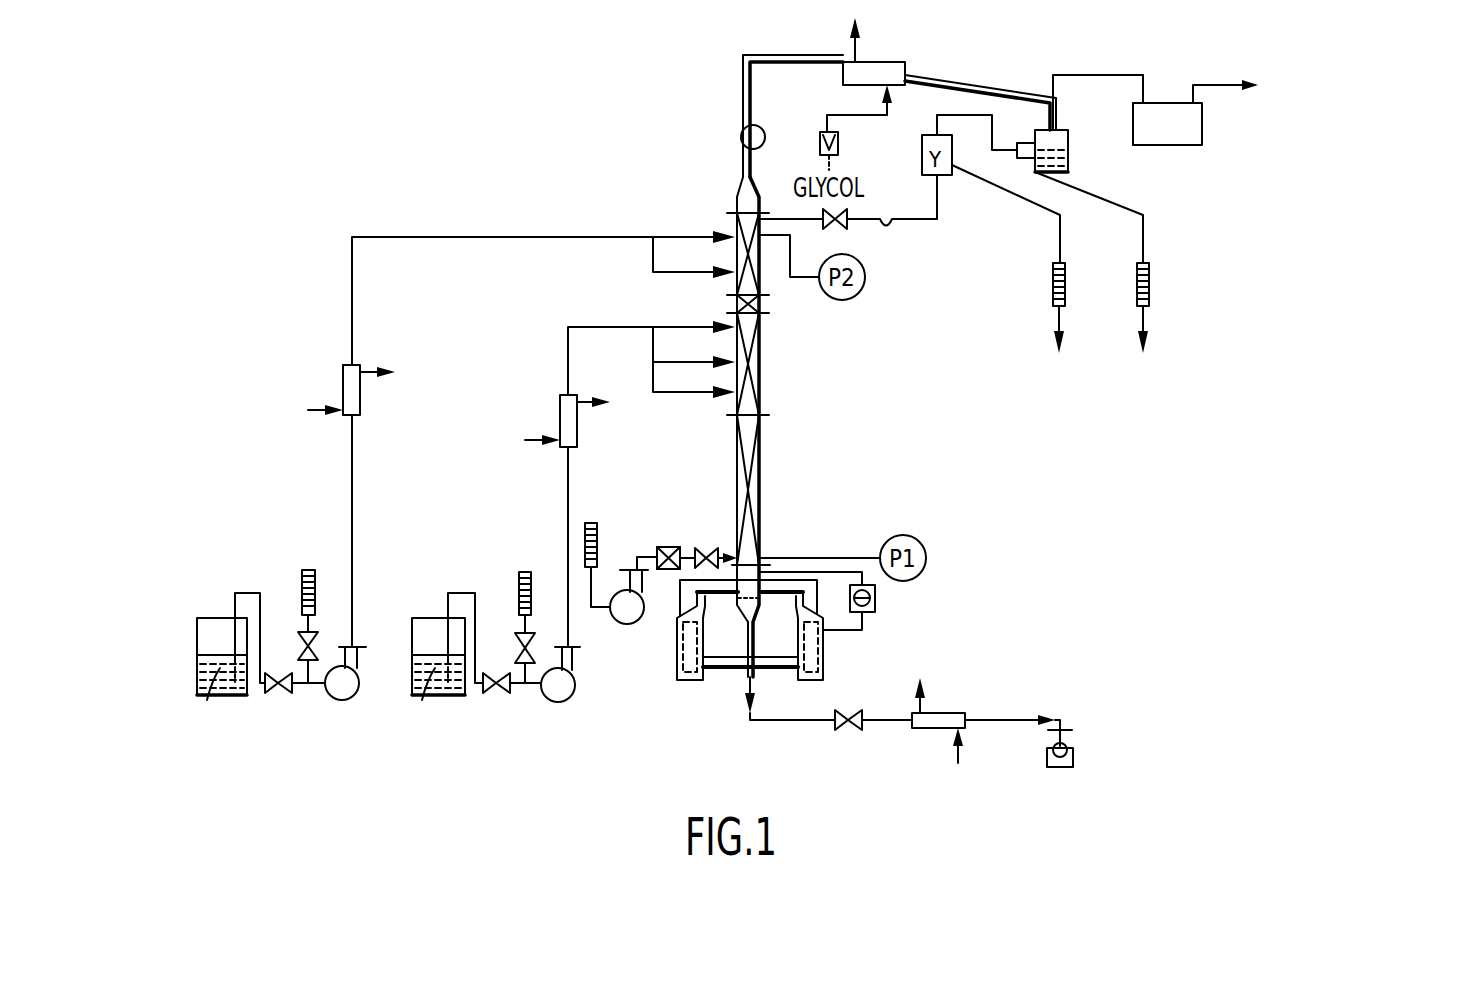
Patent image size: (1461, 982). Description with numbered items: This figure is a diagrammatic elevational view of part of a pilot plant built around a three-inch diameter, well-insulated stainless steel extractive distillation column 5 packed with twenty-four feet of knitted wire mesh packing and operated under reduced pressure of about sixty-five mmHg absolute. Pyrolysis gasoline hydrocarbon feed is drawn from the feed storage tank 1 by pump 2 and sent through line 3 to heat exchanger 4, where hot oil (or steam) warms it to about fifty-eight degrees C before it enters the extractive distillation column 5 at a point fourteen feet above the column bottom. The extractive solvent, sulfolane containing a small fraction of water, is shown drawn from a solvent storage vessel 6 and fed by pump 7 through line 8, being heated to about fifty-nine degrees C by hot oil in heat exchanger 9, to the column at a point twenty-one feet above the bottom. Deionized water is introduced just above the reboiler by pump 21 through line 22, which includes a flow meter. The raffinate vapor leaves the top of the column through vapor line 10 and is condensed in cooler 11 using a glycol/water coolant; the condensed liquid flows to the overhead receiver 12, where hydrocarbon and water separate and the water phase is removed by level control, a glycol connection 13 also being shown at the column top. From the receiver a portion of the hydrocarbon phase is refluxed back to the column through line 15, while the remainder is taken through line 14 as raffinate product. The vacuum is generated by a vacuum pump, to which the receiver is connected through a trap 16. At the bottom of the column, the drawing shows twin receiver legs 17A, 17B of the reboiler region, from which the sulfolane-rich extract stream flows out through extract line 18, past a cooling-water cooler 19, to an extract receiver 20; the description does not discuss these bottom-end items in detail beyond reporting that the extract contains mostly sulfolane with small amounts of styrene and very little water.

The feed storage tank 1 is at (464, 675).
The pump 2 is at (575, 686).
The line 3 is at (568, 537).
The heat exchanger 4 is at (577, 424).
The extractive distillation column 5 is at (760, 409).
The sulfolane solvent tank 6 is at (244, 675).
The pump 7 is at (347, 700).
The line 8 is at (352, 492).
The heat exchanger 9 is at (360, 392).
The vapor line 10 is at (746, 152).
The cooler 11 is at (1012, 100).
The overhead receiver 12 is at (1068, 162).
The glycol reflux line 13 is at (937, 198).
The line 14 is at (1059, 250).
The line 15 is at (1143, 235).
The vacuum trap 16 is at (1171, 103).
The bottoms receiver 17A is at (823, 655).
The bottoms receiver 17B is at (676, 645).
The extract line 18 is at (787, 720).
The extract cooler 19 is at (925, 728).
The extract receiver 20 is at (1073, 758).
The pump 21 is at (612, 622).
The line 22 is at (598, 528).